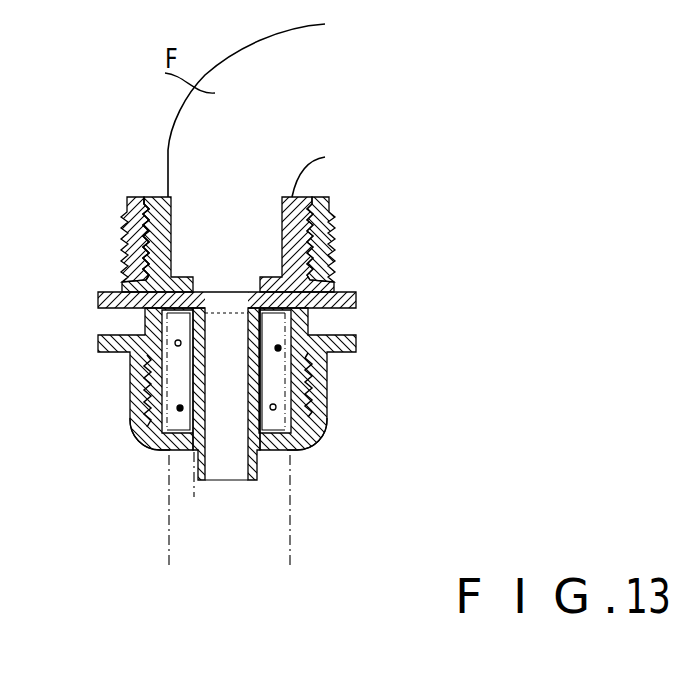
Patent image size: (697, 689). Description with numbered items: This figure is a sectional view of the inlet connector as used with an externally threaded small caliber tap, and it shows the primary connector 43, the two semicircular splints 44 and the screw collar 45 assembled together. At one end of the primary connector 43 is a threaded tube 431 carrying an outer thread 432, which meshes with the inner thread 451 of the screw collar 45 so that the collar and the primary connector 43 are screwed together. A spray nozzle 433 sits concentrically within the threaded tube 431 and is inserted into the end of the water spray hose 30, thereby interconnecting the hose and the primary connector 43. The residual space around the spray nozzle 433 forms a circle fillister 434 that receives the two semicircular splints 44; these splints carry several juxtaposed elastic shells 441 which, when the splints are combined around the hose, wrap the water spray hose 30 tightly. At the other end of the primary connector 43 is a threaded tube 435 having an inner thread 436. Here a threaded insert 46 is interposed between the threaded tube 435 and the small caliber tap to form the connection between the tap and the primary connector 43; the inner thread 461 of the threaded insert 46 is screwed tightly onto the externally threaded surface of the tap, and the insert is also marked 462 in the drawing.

The water spray hose 30 is at (295, 540).
The primary connector 43 is at (340, 301).
The semicircular splints 44 is at (182, 348).
The screw collar 45 is at (322, 380).
The threaded insert 46 is at (146, 216).
The threaded tube 431 is at (140, 398).
The outer thread 432 is at (116, 379).
The spray nozzle 433 is at (214, 470).
The circle fillister 434 is at (150, 453).
The threaded tube 435 is at (127, 243).
The inner thread 436 is at (330, 255).
The elastic shells 441 is at (298, 417).
The inner thread 451 is at (142, 373).
The inner thread 461 is at (163, 243).
The right threaded post 462 is at (348, 244).